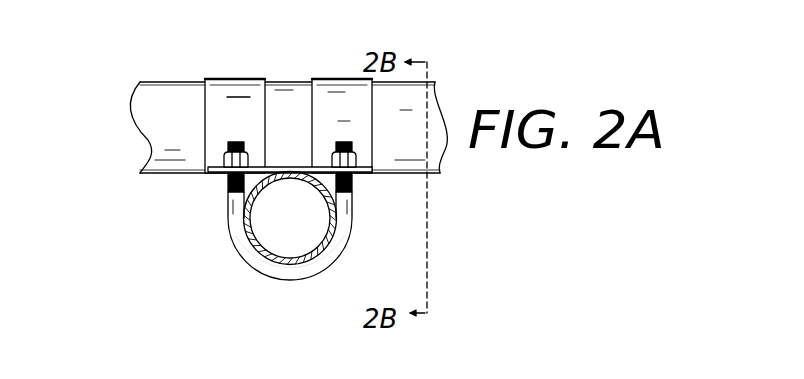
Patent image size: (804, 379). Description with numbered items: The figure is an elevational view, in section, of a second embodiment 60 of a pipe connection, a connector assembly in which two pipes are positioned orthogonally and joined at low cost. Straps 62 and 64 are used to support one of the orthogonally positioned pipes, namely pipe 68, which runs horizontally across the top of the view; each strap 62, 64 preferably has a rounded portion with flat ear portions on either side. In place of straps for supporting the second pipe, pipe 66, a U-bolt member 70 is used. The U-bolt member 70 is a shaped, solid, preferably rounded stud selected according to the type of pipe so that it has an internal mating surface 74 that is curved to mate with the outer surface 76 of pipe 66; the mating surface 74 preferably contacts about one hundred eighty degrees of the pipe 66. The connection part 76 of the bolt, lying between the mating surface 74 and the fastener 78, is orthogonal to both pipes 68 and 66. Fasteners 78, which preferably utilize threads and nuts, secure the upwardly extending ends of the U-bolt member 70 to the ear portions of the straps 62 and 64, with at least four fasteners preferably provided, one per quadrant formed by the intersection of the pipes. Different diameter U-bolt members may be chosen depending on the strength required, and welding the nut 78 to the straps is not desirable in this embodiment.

The second embodiment of a pipe connection 60 is at (106, 72).
The strap 62 is at (235, 110).
The strap 64 is at (323, 100).
The pipe 66 is at (240, 216).
The pipe 68 is at (185, 133).
The U-bolt member 70 is at (337, 249).
The internal mating surface 74 is at (316, 247).
The outer surface of pipe / connection part of bolt 76 is at (343, 203).
The fastener 78 is at (356, 152).